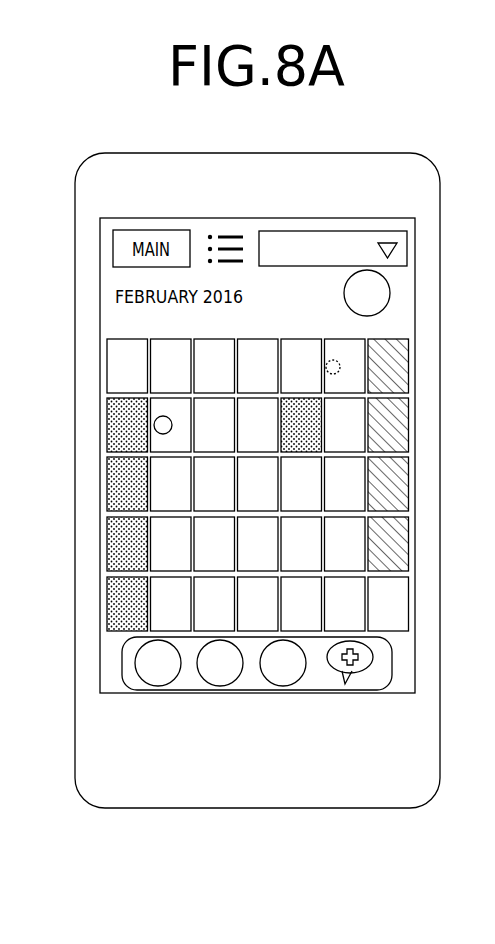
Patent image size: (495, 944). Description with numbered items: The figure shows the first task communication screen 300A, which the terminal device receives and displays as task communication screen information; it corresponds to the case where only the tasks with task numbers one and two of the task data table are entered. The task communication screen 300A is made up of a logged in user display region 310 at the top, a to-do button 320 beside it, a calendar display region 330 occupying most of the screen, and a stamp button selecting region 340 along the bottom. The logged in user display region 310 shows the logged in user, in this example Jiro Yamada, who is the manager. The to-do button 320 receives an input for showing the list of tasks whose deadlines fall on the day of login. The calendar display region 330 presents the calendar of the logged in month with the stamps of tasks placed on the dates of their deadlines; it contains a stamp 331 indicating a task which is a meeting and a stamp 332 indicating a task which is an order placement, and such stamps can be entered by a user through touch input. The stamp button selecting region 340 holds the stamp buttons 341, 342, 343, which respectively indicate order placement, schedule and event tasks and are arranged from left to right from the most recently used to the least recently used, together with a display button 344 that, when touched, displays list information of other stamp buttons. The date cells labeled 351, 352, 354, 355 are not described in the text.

The task communication screen 300A is at (337, 153).
The logged in user display region 310 is at (350, 230).
The to-do button 320 is at (387, 287).
The calendar display region 330 is at (108, 363).
The stamp 331 is at (348, 350).
The stamp 332 is at (155, 432).
The stamp button selecting region 340 is at (123, 670).
The stamp button 341 is at (158, 692).
The stamp button 342 is at (220, 692).
The stamp button 343 is at (283, 692).
The display button 344 is at (358, 673).
The holiday cell 351 is at (431, 337).
The holiday cell 352 is at (431, 395).
The holiday cell 354 is at (431, 462).
The holiday cell 355 is at (431, 519).